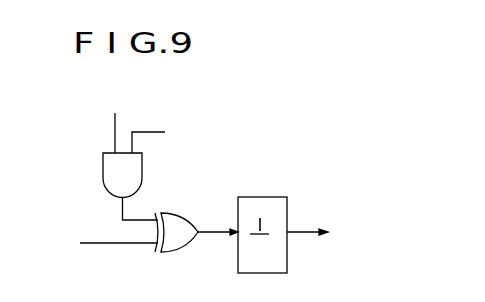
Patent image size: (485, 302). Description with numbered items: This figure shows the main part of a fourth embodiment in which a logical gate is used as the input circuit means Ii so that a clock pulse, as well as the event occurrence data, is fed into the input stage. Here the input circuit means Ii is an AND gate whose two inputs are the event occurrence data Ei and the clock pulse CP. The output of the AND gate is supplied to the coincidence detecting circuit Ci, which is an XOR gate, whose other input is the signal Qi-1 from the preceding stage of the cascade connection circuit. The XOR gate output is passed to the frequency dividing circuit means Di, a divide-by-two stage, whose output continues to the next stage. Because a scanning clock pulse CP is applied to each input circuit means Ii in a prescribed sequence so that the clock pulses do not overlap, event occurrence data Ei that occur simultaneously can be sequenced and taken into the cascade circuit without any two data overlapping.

The input circuit means Ii is at (103, 168).
The event occurrence data Ei is at (111, 122).
The clock pulse CP is at (161, 137).
The coincidence detecting circuit Ci is at (173, 214).
The output of the preceding stage Qi-1 is at (87, 245).
The frequency dividing circuit means Di is at (262, 197).